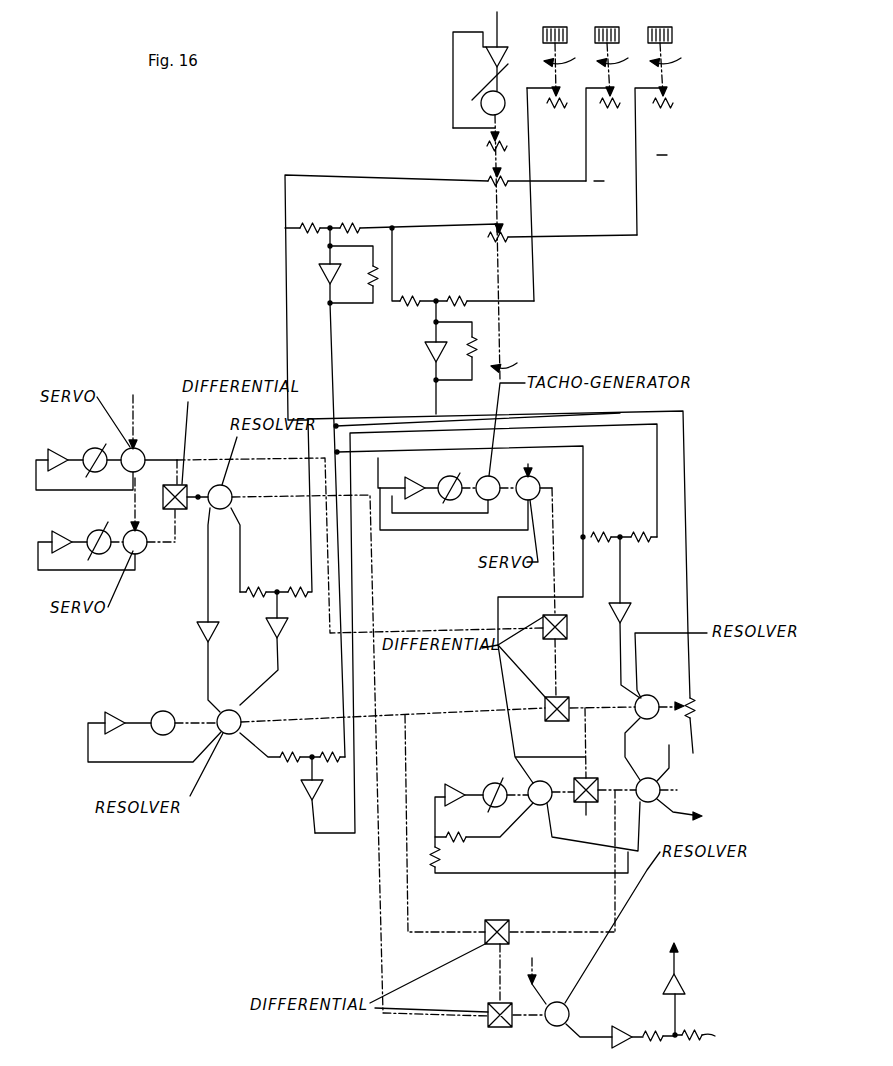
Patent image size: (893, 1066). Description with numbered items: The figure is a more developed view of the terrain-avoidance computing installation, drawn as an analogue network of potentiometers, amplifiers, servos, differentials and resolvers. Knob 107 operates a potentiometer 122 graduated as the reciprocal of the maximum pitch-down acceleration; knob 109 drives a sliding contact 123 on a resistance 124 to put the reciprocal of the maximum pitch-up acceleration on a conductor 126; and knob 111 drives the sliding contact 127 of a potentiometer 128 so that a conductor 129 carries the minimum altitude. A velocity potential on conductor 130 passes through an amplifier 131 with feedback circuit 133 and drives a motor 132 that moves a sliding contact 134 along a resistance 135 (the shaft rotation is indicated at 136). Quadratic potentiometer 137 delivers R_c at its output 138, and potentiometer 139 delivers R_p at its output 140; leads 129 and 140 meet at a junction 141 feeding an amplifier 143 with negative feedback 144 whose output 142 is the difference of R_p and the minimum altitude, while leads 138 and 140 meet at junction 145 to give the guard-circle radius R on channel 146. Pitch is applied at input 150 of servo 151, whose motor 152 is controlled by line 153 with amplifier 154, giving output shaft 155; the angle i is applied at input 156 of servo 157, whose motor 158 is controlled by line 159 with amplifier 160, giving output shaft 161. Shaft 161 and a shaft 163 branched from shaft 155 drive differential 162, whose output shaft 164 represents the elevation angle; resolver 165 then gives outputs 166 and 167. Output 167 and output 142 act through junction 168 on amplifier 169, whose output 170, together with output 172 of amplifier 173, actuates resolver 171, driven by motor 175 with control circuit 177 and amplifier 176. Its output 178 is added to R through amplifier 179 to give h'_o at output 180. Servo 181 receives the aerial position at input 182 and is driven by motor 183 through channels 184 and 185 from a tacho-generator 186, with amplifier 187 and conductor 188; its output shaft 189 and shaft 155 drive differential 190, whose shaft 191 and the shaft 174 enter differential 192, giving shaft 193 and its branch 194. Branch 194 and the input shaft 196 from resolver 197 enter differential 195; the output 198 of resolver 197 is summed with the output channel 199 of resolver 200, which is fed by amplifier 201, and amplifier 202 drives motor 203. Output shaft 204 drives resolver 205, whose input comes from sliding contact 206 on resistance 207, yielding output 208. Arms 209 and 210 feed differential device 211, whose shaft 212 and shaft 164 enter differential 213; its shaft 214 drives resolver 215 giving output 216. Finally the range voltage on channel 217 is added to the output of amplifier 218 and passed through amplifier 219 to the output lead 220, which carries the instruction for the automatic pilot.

The knob 107 is at (673, 22).
The knob 109 is at (620, 22).
The knob 111 is at (567, 22).
The potentiometer 122 is at (665, 110).
The sliding contact 123 is at (611, 95).
The resistance 124 is at (612, 110).
The conductor 126 is at (586, 157).
The sliding contact 127 is at (553, 95).
The potentiometer 128 is at (560, 110).
The conductor 129 is at (533, 208).
The conductor 130 is at (497, 28).
The amplifier 131 is at (508, 64).
The motor 132 is at (487, 93).
The feedback circuit 133 is at (453, 96).
The sliding contact 134 is at (495, 138).
The resistance 135 is at (490, 146).
The shaft rotation 136 is at (512, 352).
The potentiometer 137 is at (496, 186).
The output 138 is at (392, 172).
The potentiometer 139 is at (494, 242).
The output 140 is at (432, 222).
The junction 141 is at (440, 296).
The output 142 is at (406, 412).
The amplifier 143 is at (428, 352).
The negative feedback 144 is at (462, 382).
The junction 145 is at (335, 224).
The channel 146 is at (343, 360).
The input 150 is at (133, 420).
The servo 151 is at (141, 451).
The motor 152 is at (97, 447).
The line 153 is at (102, 491).
The amplifier 154 is at (58, 448).
The output shaft 155 is at (272, 456).
The input 156 is at (136, 518).
The servo 157 is at (141, 553).
The motor 158 is at (101, 530).
The line 159 is at (106, 570).
The amplifier 160 is at (62, 530).
The output shaft 161 is at (158, 546).
The differential 162 is at (173, 512).
The shaft 163 is at (177, 472).
The output shaft 164 is at (178, 515).
The resolver 165 is at (230, 489).
The output 166 is at (205, 590).
The output 167 is at (243, 555).
The junction 168 is at (277, 589).
The amplifier 169 is at (281, 627).
The output 170 is at (279, 669).
The resolver 171 is at (231, 735).
The output 172 is at (211, 668).
The amplifier 173 is at (214, 630).
The input shaft 174 is at (462, 708).
The driving motor 175 is at (164, 710).
The amplifier 176 is at (113, 711).
The control circuit 177 is at (145, 763).
The output 178 is at (259, 759).
The amplifier 179 is at (304, 792).
The output 180 is at (513, 418).
The servo 181 is at (534, 493).
The electrical input 182 is at (535, 476).
The motor 183 is at (452, 477).
The channel 184 is at (500, 531).
The channel 185 is at (422, 514).
The tacho-generator 186 is at (491, 477).
The amplifier 187 is at (428, 479).
The conductor 188 is at (378, 470).
The output shaft 189 is at (582, 539).
The differential 190 is at (567, 631).
The output shaft 191 is at (558, 664).
The differential 192 is at (548, 723).
The output shaft 193 is at (602, 718).
The branch 194 is at (583, 751).
The differential 195 is at (585, 816).
The input shaft 196 is at (563, 798).
The resolver 197 is at (541, 784).
The output 198 is at (515, 822).
The output channel 199 is at (549, 870).
The resolver 200 is at (647, 695).
The amplifier 201 is at (633, 620).
The amplifier 202 is at (458, 783).
The driving motor 203 is at (495, 783).
The output shaft 204 is at (607, 797).
The resolver 205 is at (676, 790).
The sliding contact 206 is at (673, 690).
The resistance 207 is at (693, 753).
The output 208 is at (676, 814).
The arm 209 is at (410, 902).
The arm 210 is at (614, 894).
The differential device 211 is at (510, 900).
The output shaft 212 is at (498, 980).
The differential 213 is at (500, 1028).
The output shaft 214 is at (530, 1022).
The resolver 215 is at (567, 1005).
The output 216 is at (593, 1041).
The channel 217 is at (700, 1040).
The amplifier 218 is at (623, 1026).
The amplifier 219 is at (678, 983).
The output lead 220 is at (677, 958).